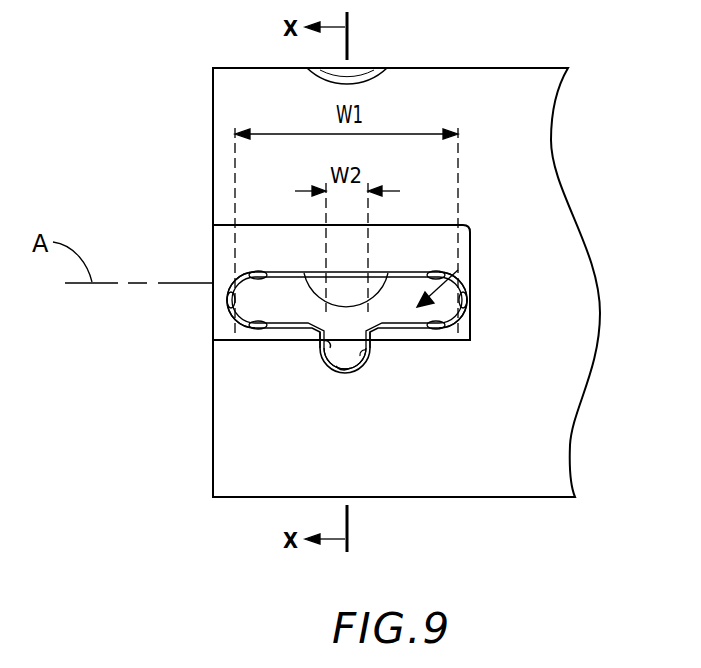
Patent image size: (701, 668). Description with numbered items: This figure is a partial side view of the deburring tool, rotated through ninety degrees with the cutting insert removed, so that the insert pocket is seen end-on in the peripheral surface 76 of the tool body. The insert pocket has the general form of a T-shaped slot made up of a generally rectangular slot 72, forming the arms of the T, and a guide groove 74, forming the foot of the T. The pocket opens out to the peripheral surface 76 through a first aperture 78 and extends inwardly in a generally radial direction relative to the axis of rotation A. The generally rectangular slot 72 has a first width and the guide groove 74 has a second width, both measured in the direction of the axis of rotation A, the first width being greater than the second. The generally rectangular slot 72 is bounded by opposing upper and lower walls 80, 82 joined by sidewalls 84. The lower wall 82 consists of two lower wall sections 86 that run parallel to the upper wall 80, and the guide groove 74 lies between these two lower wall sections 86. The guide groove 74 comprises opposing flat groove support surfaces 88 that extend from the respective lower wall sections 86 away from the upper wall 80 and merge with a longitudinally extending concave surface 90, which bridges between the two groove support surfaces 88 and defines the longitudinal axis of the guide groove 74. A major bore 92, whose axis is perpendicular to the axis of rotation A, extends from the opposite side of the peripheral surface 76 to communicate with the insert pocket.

The generally rectangular slot 72 is at (460, 275).
The guide groove 74 is at (343, 356).
The peripheral surface 76 is at (458, 88).
The first aperture 78 is at (250, 310).
The upper wall 80 is at (270, 280).
The lower wall 82 is at (447, 297).
The sidewalls 84 is at (233, 300).
The lower wall sections 86 is at (255, 322).
The groove support surfaces 88 is at (322, 355).
The concave surface 90 is at (332, 371).
The major bore 92 is at (381, 274).